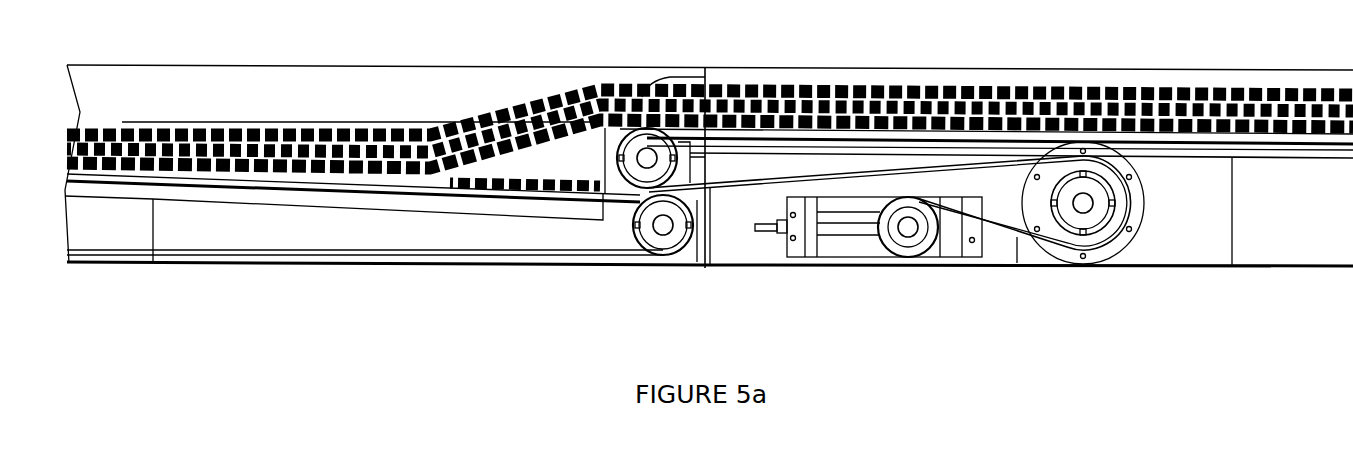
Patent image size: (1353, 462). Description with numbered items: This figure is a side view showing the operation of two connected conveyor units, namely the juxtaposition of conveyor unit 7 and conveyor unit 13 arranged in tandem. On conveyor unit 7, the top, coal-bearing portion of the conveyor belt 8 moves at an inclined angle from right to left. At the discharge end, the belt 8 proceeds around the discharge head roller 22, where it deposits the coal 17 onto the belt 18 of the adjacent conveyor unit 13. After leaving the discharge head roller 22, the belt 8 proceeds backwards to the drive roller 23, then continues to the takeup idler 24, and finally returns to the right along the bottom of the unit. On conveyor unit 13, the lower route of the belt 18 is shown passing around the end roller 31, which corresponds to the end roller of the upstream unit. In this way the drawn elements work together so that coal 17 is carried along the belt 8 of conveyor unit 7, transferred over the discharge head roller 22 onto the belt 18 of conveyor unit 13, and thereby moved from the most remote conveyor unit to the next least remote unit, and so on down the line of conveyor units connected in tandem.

The conveyor unit 7 is at (1253, 242).
The conveyor belt 8 is at (1013, 260).
The conveyor unit 13 is at (260, 225).
The coal 17 is at (543, 97).
The belt 18 is at (458, 199).
The discharge head roller 22 is at (617, 130).
The drive roller 23 is at (1107, 233).
The takeup idler 24 is at (937, 262).
The end roller 31 is at (678, 254).